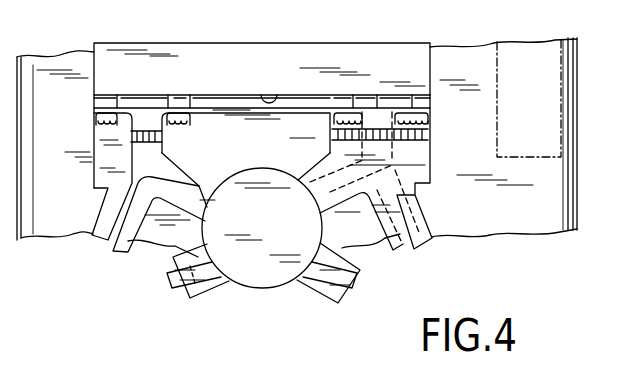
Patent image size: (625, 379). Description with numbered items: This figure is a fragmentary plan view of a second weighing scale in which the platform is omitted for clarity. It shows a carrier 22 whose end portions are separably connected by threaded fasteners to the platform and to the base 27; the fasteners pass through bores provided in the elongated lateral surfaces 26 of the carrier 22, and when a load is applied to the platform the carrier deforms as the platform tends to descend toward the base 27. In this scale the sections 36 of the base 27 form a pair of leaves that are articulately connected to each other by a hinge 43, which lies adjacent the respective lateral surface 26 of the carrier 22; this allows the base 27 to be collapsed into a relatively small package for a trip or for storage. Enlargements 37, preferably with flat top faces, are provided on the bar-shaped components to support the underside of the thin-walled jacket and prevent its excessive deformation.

The carrier 22 is at (263, 81).
The elongated lateral surfaces 26 is at (280, 93).
The base 27 is at (532, 200).
The sections of the base 36 is at (113, 242).
The enlargements 37 is at (263, 263).
The hinge 43 is at (332, 139).